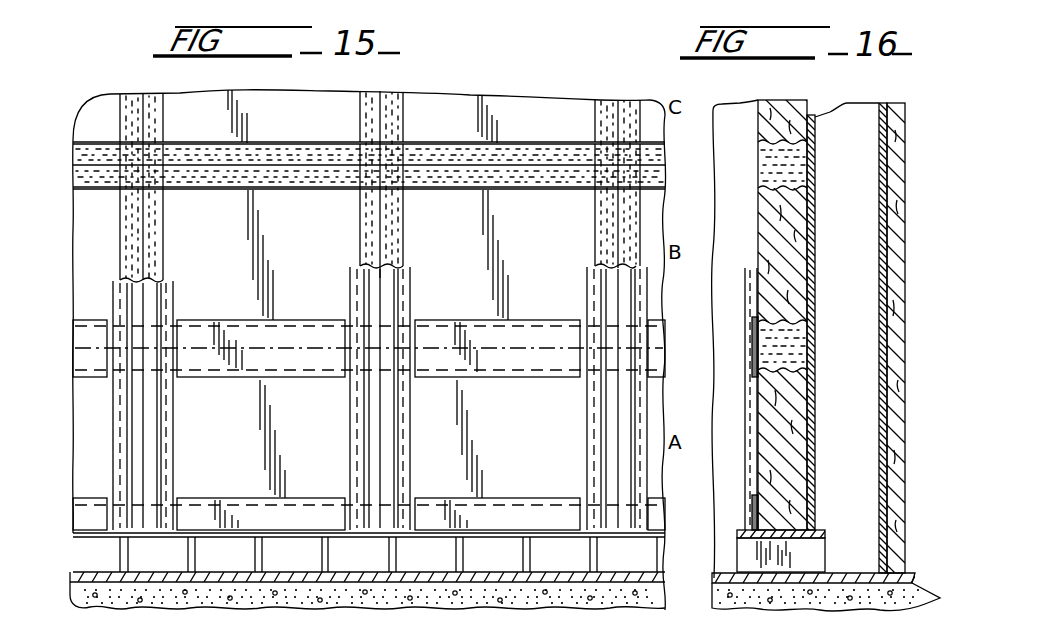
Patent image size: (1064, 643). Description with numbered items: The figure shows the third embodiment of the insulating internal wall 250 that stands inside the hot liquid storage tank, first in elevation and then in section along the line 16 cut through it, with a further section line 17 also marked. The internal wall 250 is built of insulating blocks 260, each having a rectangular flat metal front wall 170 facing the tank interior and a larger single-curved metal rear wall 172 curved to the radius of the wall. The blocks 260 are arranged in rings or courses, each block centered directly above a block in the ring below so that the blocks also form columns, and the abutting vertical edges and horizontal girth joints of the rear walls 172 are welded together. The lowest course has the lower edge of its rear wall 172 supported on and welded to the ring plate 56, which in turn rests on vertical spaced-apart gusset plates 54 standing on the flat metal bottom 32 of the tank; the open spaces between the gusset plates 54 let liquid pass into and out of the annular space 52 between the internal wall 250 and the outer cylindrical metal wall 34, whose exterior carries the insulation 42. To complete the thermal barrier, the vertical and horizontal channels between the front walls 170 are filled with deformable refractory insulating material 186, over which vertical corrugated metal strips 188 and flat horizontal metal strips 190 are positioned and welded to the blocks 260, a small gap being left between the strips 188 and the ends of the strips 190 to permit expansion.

In FIG. 15, the section line 16— 16 is at (560, 125).
In FIG. 15, the section line 17— 17 is at (290, 372).
In FIG. 15, the flat metal circular bottom 32 is at (630, 577).
In FIG. 16, the flat metal circular bottom 32 is at (765, 580).
In FIG. 16, the vertical circular cylindrical metal wall 34 is at (886, 182).
In FIG. 16, the insulation 42 is at (892, 268).
In FIG. 16, the annular space 52 is at (860, 430).
In FIG. 15, the gusset plates 54 is at (330, 556).
In FIG. 16, the gusset plates 54 is at (822, 553).
In FIG. 15, the ring plate 56 is at (90, 540).
In FIG. 16, the ring plate 56 is at (748, 545).
In FIG. 15, the front wall 170 is at (323, 121).
In FIG. 15, the rear wall 172 is at (173, 642).
In FIG. 16, the rear wall 172 is at (812, 455).
In FIG. 15, the deformable refractory insulating material 186 is at (130, 100).
In FIG. 16, the deformable refractory insulating material 186 is at (768, 162).
In FIG. 15, the vertical corrugated metal strips 188 is at (402, 284).
In FIG. 15, the flat metal strips 190 is at (230, 325).
In FIG. 15, the internal wall 250 is at (469, 85).
In FIG. 16, the internal wall 250 is at (822, 196).
In FIG. 15, the insulating blocks 260 is at (160, 232).
In FIG. 16, the insulating blocks 260 is at (822, 388).